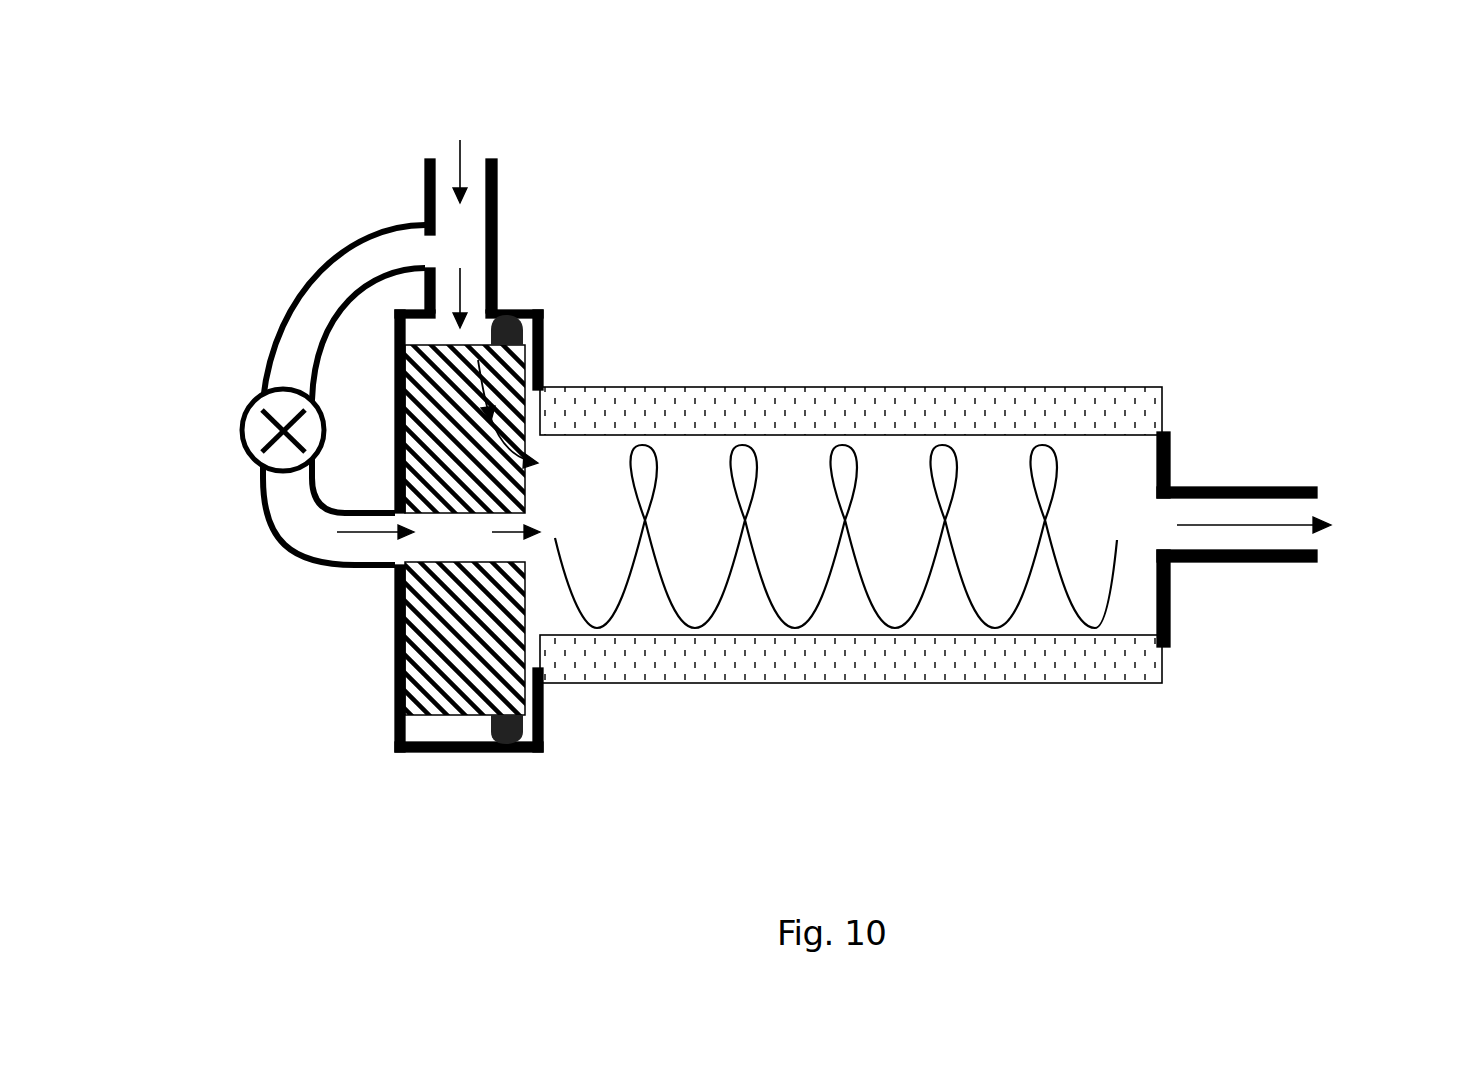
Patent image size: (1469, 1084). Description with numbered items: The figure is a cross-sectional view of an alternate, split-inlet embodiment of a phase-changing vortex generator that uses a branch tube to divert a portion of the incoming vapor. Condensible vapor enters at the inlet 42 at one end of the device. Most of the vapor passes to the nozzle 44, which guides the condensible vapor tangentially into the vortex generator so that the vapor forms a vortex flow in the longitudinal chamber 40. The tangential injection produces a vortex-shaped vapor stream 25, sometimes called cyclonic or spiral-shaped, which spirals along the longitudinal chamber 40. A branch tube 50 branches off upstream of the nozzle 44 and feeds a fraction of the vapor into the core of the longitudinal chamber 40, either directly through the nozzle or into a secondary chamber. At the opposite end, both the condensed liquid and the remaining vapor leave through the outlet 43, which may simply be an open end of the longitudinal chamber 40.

The inlet 42 is at (497, 188).
The branch tube 50 is at (313, 288).
The nozzle 44 is at (393, 690).
The longitudinal chamber 40 is at (1135, 597).
The vortex-shaped vapor stream 25 is at (865, 495).
The outlet 43 is at (1197, 487).